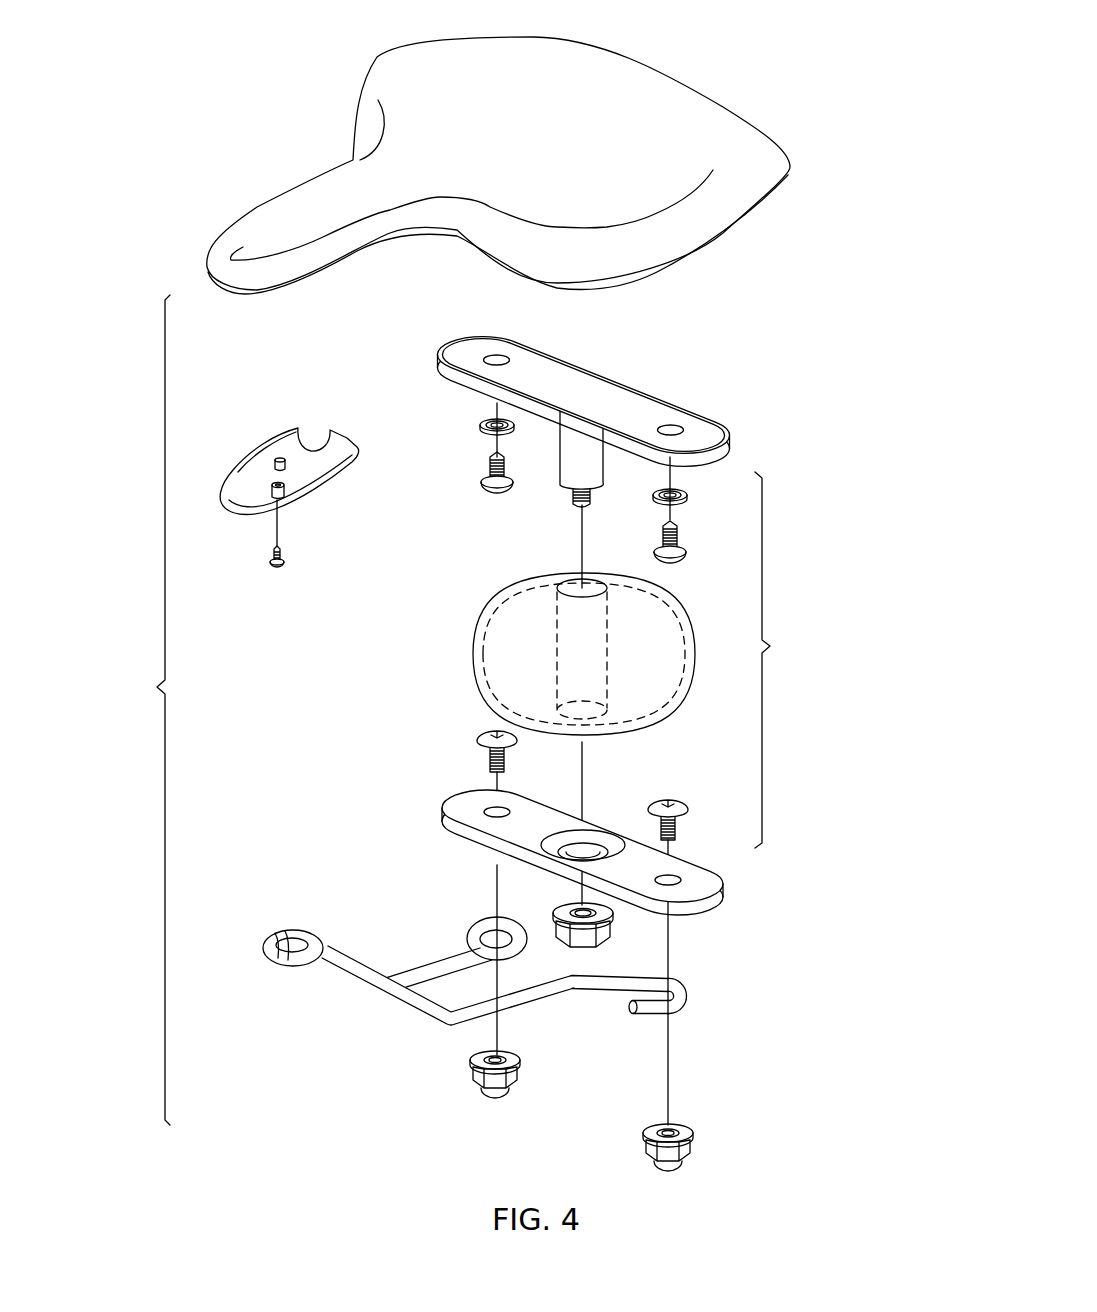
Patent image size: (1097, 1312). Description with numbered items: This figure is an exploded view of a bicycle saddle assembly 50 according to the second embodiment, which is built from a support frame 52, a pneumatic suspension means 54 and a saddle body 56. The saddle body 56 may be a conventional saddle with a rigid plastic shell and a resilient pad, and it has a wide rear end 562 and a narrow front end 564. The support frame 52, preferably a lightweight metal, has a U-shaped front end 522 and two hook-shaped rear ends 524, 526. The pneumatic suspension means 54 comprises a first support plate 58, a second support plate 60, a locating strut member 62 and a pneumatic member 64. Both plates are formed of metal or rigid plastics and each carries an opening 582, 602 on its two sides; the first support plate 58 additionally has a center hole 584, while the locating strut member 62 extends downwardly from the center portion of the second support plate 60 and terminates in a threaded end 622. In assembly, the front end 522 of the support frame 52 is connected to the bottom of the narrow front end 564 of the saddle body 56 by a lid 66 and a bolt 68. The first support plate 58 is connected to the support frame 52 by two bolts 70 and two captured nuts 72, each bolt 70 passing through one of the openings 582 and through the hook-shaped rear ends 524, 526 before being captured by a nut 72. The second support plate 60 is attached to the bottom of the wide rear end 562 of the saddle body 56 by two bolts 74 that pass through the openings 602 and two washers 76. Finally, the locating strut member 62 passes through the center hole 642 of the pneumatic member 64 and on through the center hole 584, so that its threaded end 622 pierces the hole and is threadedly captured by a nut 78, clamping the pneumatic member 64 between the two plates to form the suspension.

The bicycle saddle assembly 50 is at (143, 684).
The support frame 52 is at (512, 967).
The U-shaped front end 522 is at (275, 963).
The hook-shaped rear end 524 is at (480, 917).
The hook-shaped rear end 526 is at (690, 1007).
The pneumatic suspension means 54 is at (790, 641).
The saddle body 56 is at (475, 162).
The wide rear end 562 is at (705, 128).
The narrow front end 564 is at (243, 247).
The first support plate 58 is at (598, 837).
The opening 582 is at (488, 808).
The center hole 584 is at (593, 838).
The second support plate 60 is at (528, 390).
The opening 602 is at (493, 358).
The locating strut member 62 is at (525, 494).
The threaded end 622 is at (572, 496).
The pneumatic member 64 is at (534, 654).
The center hole 642 is at (562, 577).
The lid 66 is at (238, 517).
The bolt 68 is at (272, 566).
The bolt 70 is at (482, 757).
The captured nut 72 is at (490, 1096).
The bolt 74 is at (480, 486).
The washer 76 is at (474, 434).
The nut 78 is at (610, 932).